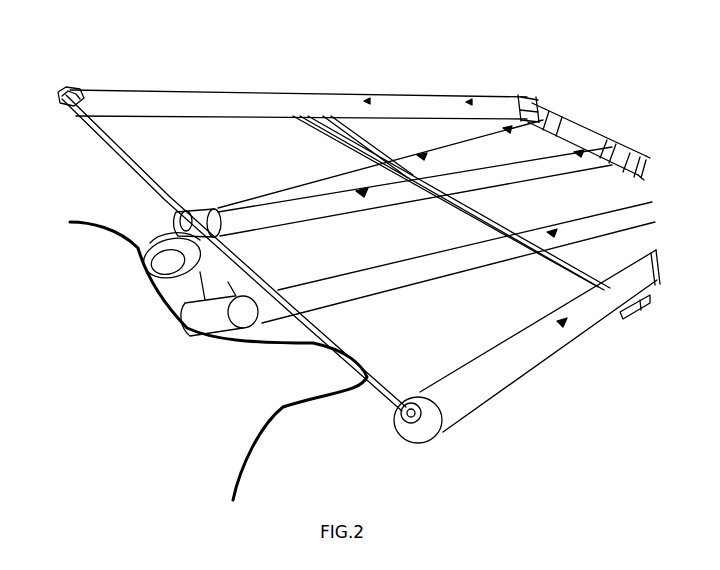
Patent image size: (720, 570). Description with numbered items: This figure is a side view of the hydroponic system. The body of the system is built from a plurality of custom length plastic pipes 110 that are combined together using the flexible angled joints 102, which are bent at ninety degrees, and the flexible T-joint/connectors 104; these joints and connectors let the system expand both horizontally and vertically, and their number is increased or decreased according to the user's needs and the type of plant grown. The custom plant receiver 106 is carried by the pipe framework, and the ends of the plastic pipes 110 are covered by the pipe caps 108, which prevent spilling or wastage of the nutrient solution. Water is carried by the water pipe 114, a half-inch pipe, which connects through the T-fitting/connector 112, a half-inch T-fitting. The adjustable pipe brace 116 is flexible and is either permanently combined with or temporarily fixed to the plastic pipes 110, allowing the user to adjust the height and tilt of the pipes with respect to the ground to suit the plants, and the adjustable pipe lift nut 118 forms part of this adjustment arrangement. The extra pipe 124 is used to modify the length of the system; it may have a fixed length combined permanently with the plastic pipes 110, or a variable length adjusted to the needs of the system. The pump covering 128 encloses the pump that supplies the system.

The flexible angled joint 102 is at (518, 98).
The flexible T-joint/connector 104 is at (618, 148).
The custom plant receiver 106 is at (228, 97).
The pipe cap 108 is at (413, 428).
The custom length plastic pipe 110 is at (106, 100).
The T-fitting/connector 112 is at (196, 214).
The water pipe 114 is at (142, 175).
The adjustable pipe brace 116 is at (345, 128).
The adjustable pipe lift nut 118 is at (405, 157).
The extra pipe 124 is at (567, 128).
The pump covering 128 is at (202, 357).